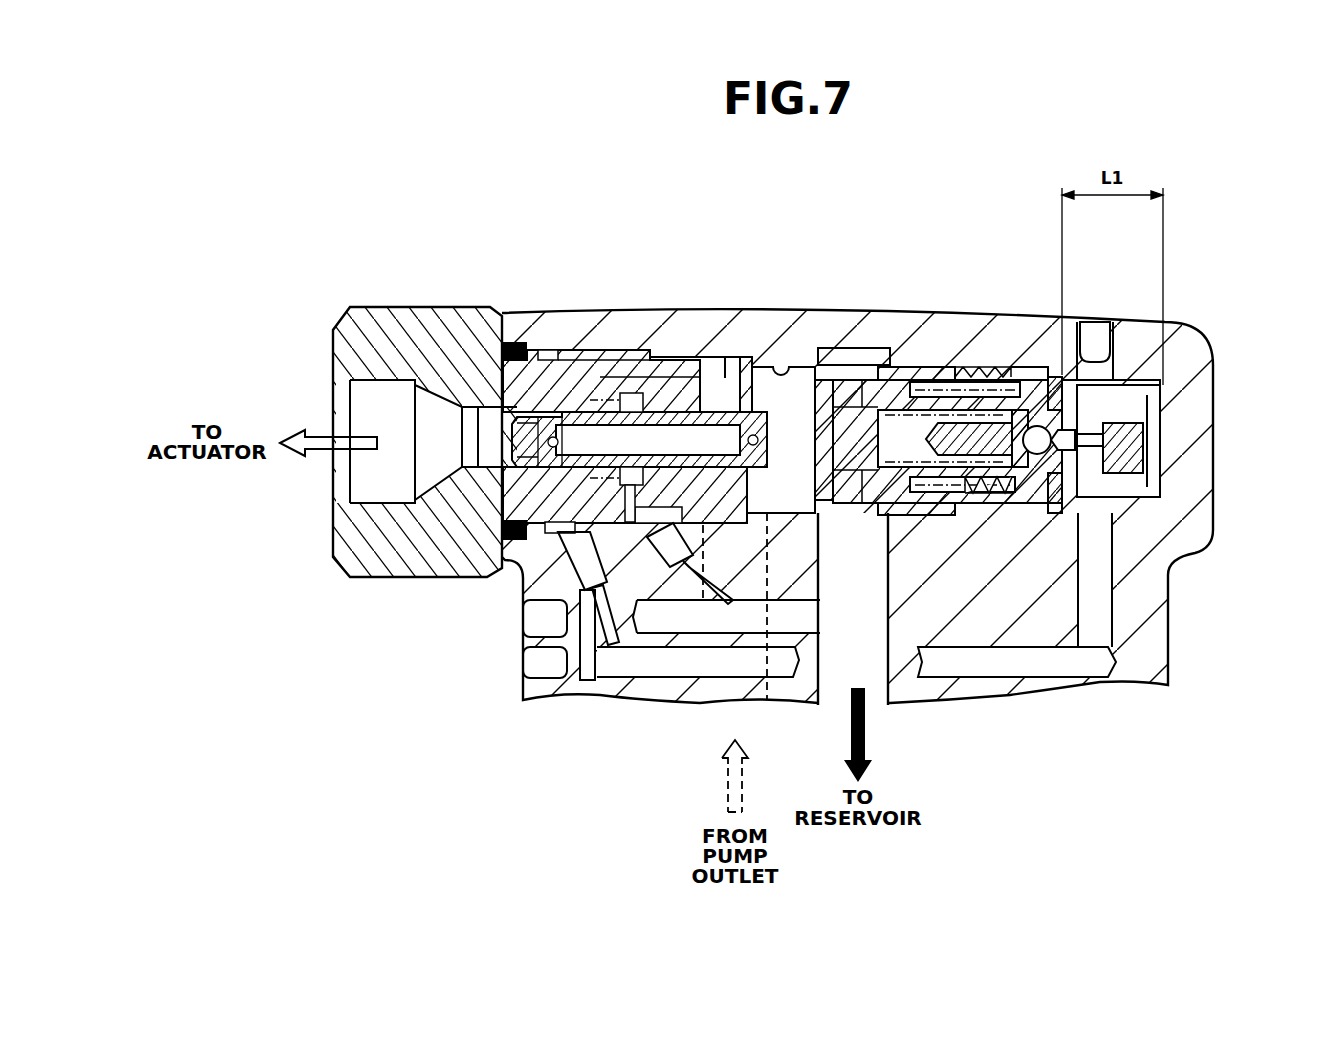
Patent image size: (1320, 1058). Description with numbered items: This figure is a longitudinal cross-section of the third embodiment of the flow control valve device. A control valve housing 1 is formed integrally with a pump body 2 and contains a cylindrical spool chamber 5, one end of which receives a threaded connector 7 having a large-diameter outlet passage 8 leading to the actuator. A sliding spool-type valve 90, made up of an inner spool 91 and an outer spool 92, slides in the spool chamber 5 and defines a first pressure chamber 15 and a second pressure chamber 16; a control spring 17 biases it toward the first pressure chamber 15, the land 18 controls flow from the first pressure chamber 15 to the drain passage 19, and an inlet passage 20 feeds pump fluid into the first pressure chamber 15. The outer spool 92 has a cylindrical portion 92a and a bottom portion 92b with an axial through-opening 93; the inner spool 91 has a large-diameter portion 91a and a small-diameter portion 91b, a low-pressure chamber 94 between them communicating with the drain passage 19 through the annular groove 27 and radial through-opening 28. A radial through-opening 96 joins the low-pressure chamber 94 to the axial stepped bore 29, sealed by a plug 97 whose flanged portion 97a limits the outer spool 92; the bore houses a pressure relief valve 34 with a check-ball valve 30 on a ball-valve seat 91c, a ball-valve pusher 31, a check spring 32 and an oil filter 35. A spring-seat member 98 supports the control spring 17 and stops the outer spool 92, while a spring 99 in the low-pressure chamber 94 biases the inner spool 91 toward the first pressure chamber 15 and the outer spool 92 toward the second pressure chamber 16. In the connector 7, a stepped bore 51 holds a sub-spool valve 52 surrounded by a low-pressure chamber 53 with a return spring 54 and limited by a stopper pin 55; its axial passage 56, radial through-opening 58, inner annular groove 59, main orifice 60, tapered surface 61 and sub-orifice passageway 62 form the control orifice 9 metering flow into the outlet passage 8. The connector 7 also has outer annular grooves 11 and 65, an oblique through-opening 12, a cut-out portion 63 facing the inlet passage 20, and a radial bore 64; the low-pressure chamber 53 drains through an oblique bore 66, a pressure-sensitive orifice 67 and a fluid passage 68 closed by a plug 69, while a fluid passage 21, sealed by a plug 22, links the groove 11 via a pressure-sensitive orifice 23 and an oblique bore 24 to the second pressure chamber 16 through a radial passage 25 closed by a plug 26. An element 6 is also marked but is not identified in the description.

The control valve housing 1 is at (1192, 352).
The pump body 2 is at (536, 702).
The valve spool chamber 5 is at (768, 370).
The passage 6 is at (500, 575).
The connector 7 is at (348, 318).
The outlet passage 8 is at (385, 330).
The control orifice 9 is at (408, 266).
The annular groove 11 is at (546, 350).
The oblique through-opening 12 is at (400, 540).
The first pressure chamber 15 is at (718, 355).
The second pressure chamber 16 is at (1131, 360).
The control spring 17 is at (1200, 385).
The land 18 is at (870, 518).
The drain passage 19 is at (880, 650).
The inlet passage 20 is at (767, 700).
The fluid passage 21 is at (1095, 655).
The plug 22 is at (535, 662).
The pressure-sensitive orifice 23 is at (620, 690).
The oblique bore 24 is at (582, 680).
The radial passage 25 is at (1105, 618).
The plug 26 is at (1097, 345).
The annular groove 27 is at (908, 700).
The radial through-opening 28 is at (920, 420).
The axial stepped bore 29 is at (945, 520).
The check-ball valve 30 is at (1150, 445).
The ball-valve pusher 31 is at (970, 520).
The check spring 32 is at (1000, 520).
The pressure relief valve 34 is at (1160, 465).
The oil filter 35 is at (1150, 427).
The stepped bore 51 is at (628, 350).
The sub-spool valve 52 is at (666, 372).
The low-pressure chamber 53 is at (621, 372).
The return spring 54 is at (577, 345).
The stopper pin 55 is at (731, 356).
The axial fluid passage 56 is at (676, 350).
The radial through-opening 58 is at (572, 378).
The annular groove 59 is at (518, 340).
The main orifice 60 is at (441, 335).
The tapered surface 61 is at (355, 480).
The sub-orifice passageway 62 is at (476, 335).
The cut-out portion 63 is at (773, 466).
The radial bore 64 is at (530, 588).
The annular groove 65 is at (690, 560).
The oblique bore 66 is at (665, 580).
The pressure-sensitive orifice 67 is at (708, 600).
The fluid passage 68 is at (822, 618).
The plug 69 is at (535, 620).
The sliding spool-type valve 90 is at (865, 340).
The inner spool 91 is at (962, 382).
The large-diameter portion 91a is at (815, 490).
The small-diameter portion 91b is at (1030, 520).
The ball-valve seat 91c is at (1195, 535).
The outer spool 92 is at (985, 378).
The cylindrical portion 92a is at (890, 372).
The bottom portion 92b is at (1032, 378).
The axial through-opening 93 is at (1068, 378).
The low-pressure chamber 94 is at (1010, 390).
The radial through-opening 96 is at (938, 405).
The plug 97 is at (832, 348).
The flanged portion 97a is at (790, 365).
The spring-seat member 98 is at (1180, 560).
The spring 99 is at (1015, 520).